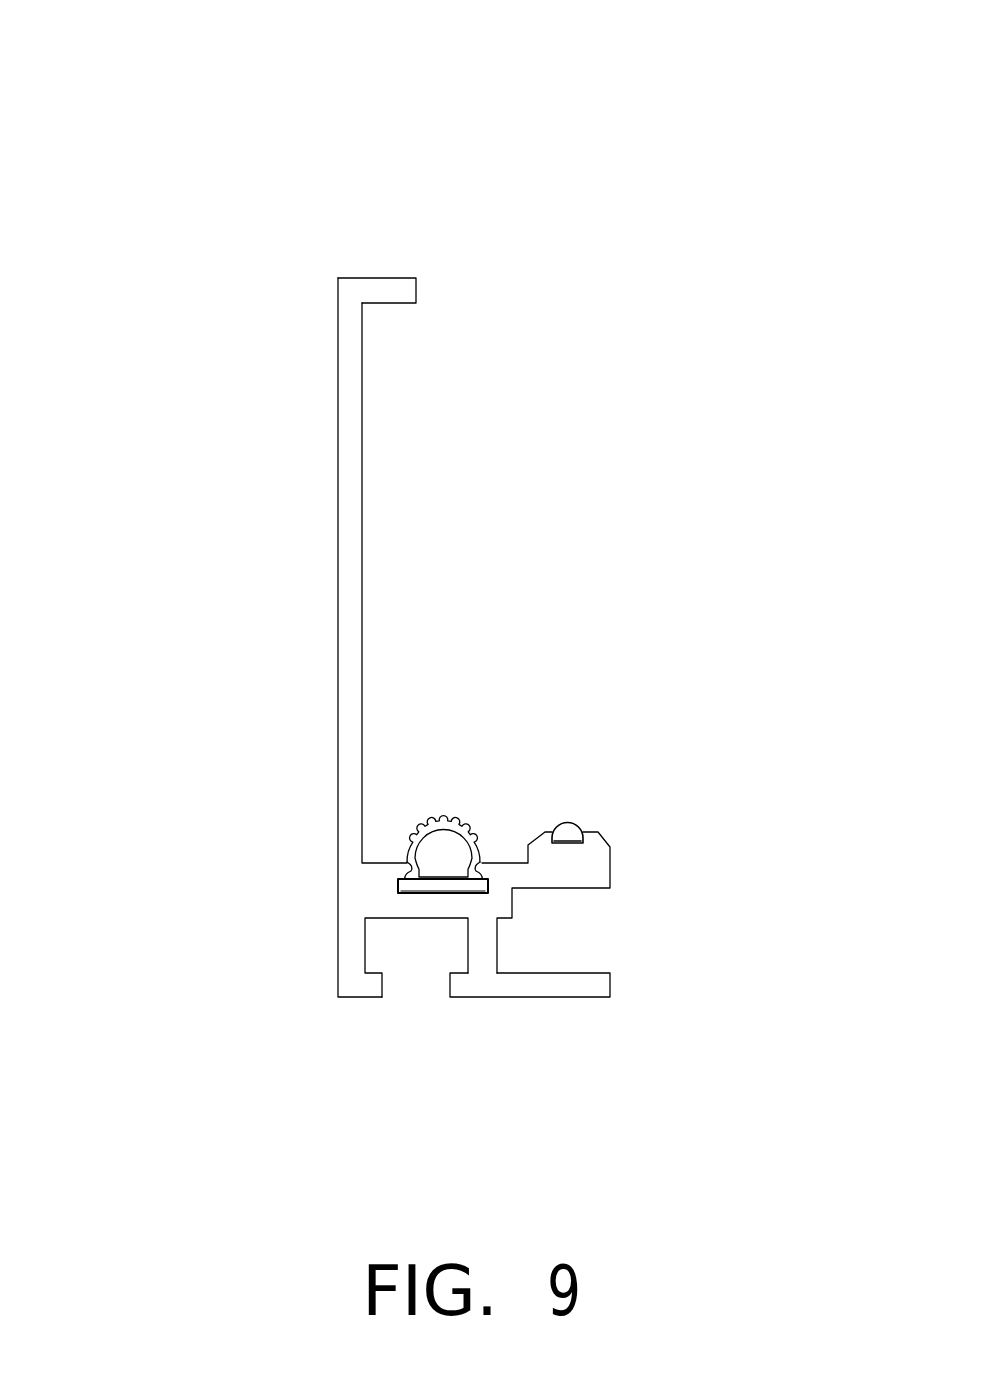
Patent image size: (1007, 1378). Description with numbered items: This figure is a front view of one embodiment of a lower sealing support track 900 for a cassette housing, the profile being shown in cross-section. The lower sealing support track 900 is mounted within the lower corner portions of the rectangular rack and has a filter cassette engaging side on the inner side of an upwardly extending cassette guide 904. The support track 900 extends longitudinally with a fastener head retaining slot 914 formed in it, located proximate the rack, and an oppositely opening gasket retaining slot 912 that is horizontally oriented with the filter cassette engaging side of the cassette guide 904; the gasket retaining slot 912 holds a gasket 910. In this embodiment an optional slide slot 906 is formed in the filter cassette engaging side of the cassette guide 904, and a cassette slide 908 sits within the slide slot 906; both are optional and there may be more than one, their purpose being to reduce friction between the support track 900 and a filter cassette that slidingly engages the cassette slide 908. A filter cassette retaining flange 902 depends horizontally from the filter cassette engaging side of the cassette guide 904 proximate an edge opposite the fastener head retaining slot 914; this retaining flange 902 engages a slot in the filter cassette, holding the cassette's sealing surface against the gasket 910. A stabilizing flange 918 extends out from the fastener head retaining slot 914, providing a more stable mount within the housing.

The lower sealing support track 900 is at (124, 128).
The filter cassette retaining flange 902 is at (390, 292).
The cassette guide 904 is at (349, 460).
The slide slot 906 is at (593, 832).
The cassette slide 908 is at (568, 830).
The gasket 910 is at (433, 822).
The gasket retaining slot 912 is at (400, 882).
The fastener head retaining slot 914 is at (412, 957).
The bottom foot flange 918 is at (598, 985).